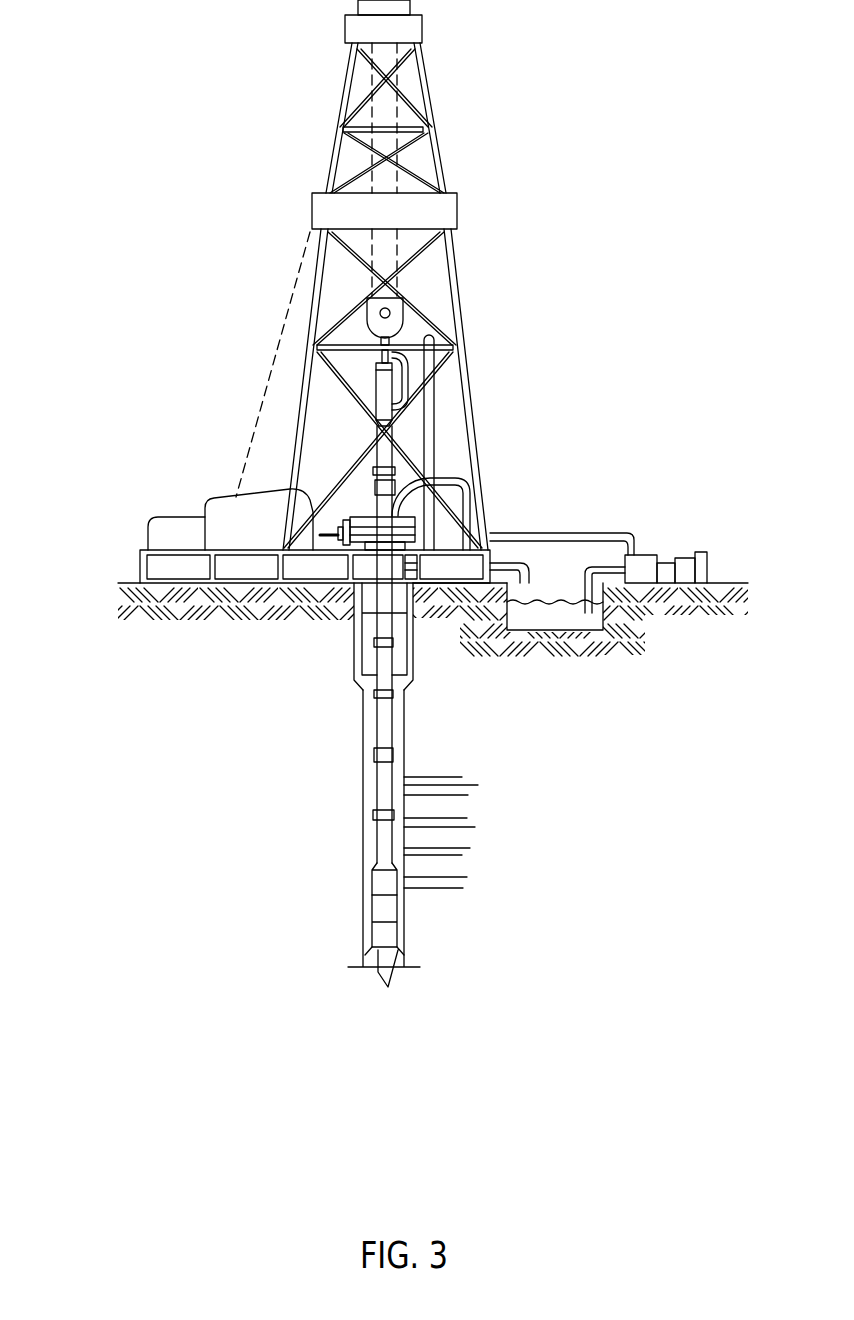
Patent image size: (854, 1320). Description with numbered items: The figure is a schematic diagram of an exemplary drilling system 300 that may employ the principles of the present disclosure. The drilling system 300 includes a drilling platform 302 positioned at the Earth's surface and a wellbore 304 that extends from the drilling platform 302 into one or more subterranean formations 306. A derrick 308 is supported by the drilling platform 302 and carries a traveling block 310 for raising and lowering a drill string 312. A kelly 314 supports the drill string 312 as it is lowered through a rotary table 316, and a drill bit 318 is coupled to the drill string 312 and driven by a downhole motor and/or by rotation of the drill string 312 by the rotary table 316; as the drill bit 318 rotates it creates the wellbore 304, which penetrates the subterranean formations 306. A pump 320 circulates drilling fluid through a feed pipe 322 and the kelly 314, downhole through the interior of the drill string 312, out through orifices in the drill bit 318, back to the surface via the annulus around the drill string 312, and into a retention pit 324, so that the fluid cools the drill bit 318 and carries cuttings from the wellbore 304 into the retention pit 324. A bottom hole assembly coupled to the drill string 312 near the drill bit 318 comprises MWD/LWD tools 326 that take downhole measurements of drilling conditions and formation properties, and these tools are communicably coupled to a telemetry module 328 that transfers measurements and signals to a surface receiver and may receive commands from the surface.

The drilling system 300 is at (603, 258).
The drilling platform 302 is at (140, 560).
The wellbore 304 is at (405, 742).
The subterranean formations 306 is at (478, 775).
The derrick 308 is at (427, 100).
The traveling block 310 is at (397, 312).
The drill string 312 is at (387, 712).
The kelly 314 is at (383, 398).
The rotary table 316 is at (430, 477).
The drill bit 318 is at (404, 948).
The pump 320 is at (645, 556).
The feed pipe 322 is at (608, 533).
The retention pit 324 is at (580, 632).
The MWD/LWD tools 326 is at (375, 912).
The telemetry module 328 is at (375, 873).